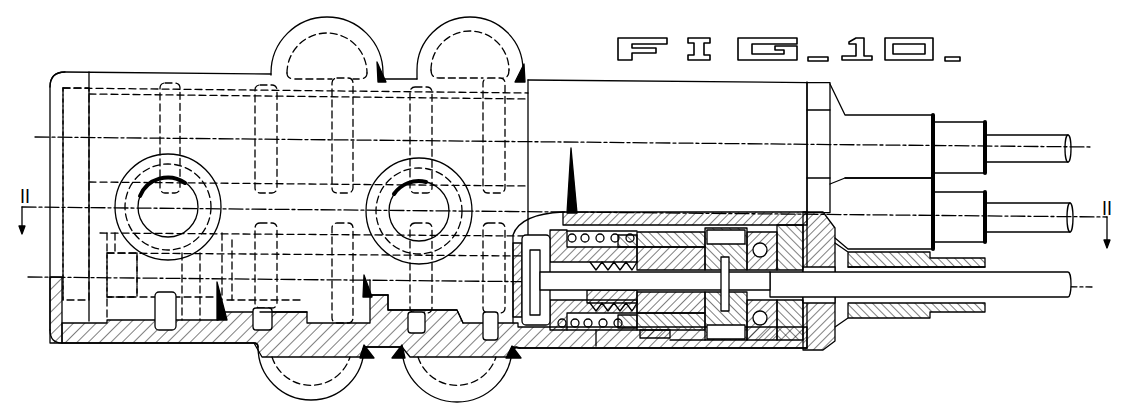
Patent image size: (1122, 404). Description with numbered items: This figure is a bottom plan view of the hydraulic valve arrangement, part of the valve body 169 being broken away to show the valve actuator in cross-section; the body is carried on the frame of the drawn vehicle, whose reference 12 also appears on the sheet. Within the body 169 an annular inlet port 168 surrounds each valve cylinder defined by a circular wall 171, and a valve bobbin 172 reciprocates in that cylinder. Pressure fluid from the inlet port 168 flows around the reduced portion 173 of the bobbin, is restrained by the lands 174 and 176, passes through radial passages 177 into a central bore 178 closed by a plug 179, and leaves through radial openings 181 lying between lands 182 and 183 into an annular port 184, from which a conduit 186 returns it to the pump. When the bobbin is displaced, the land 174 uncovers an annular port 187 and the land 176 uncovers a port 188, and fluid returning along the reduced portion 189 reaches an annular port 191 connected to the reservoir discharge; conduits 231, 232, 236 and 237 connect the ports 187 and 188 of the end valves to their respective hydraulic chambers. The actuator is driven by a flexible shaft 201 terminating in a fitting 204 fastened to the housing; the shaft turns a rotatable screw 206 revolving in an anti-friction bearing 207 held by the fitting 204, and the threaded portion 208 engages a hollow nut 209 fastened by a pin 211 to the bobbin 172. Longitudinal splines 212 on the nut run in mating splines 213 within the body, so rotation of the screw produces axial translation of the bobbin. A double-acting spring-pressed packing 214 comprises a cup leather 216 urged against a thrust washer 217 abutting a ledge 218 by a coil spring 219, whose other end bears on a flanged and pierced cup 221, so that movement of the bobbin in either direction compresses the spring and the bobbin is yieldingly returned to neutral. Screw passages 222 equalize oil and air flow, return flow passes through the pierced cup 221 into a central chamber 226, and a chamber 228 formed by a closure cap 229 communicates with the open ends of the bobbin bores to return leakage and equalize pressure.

The valve housing 12 is at (282, 391).
The inlet port 168 is at (408, 186).
The valve body 169 is at (228, 77).
The circular wall 171 is at (250, 322).
The valve bobbin 172 is at (398, 322).
The reduced portion 173 is at (446, 319).
The land 174 is at (522, 345).
The land 176 is at (345, 356).
The passages 177 is at (392, 300).
The central bore 178 is at (234, 249).
The plug 179 is at (117, 303).
The radial openings 181 is at (200, 322).
The land 182 is at (220, 322).
The land 183 is at (137, 316).
The annular port 184 is at (162, 126).
The conduit 186 is at (198, 196).
The annular port 187 is at (508, 63).
The port 188 is at (358, 68).
The reduced portion 189 is at (280, 318).
The annular port 191 is at (258, 125).
The flexible control shaft 201 is at (1047, 165).
The fitting 204 is at (898, 122).
The rotatable screw 206 is at (745, 341).
The anti-friction bearing 207 is at (768, 238).
The threaded portion 208 is at (690, 341).
The hollow nut 209 is at (652, 340).
The pin 211 is at (540, 285).
The longitudinal splines 212 is at (702, 247).
The mating splines 213 is at (727, 246).
The double-acting spring-pressed packing 214 is at (622, 332).
The cup leather 216 is at (600, 348).
The thrust washer 217 is at (650, 232).
The ledge 218 is at (668, 247).
The coil spring 219 is at (602, 234).
The pierced cup 221 is at (575, 331).
The screw passages 222 is at (745, 336).
The central chamber 226 is at (570, 230).
The chamber 228 is at (60, 343).
The closure cap 229 is at (75, 78).
The conduit 231 is at (495, 377).
The conduit 232 is at (368, 37).
The conduit 236 is at (518, 36).
The conduit 237 is at (267, 360).